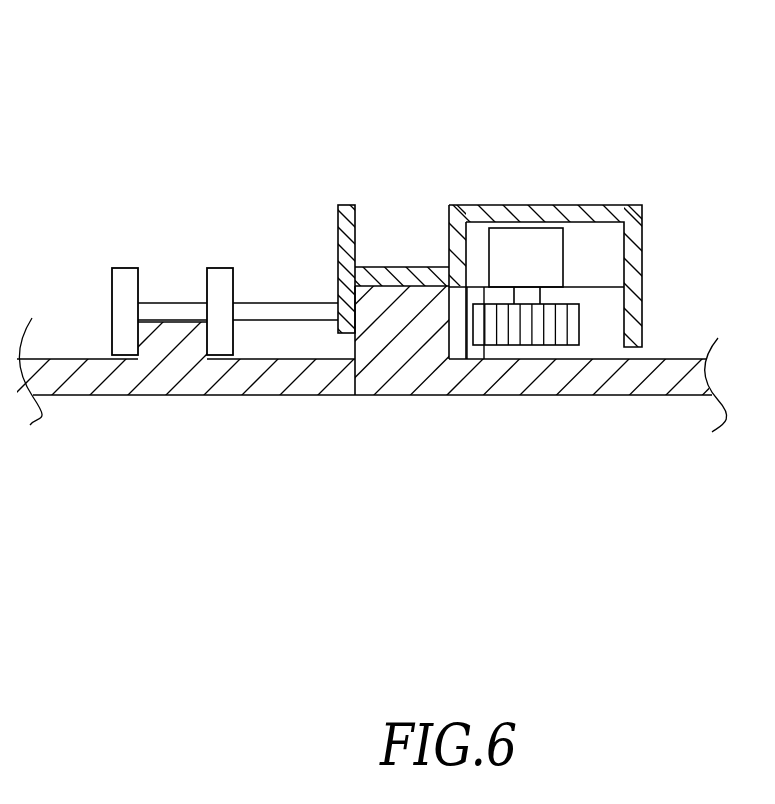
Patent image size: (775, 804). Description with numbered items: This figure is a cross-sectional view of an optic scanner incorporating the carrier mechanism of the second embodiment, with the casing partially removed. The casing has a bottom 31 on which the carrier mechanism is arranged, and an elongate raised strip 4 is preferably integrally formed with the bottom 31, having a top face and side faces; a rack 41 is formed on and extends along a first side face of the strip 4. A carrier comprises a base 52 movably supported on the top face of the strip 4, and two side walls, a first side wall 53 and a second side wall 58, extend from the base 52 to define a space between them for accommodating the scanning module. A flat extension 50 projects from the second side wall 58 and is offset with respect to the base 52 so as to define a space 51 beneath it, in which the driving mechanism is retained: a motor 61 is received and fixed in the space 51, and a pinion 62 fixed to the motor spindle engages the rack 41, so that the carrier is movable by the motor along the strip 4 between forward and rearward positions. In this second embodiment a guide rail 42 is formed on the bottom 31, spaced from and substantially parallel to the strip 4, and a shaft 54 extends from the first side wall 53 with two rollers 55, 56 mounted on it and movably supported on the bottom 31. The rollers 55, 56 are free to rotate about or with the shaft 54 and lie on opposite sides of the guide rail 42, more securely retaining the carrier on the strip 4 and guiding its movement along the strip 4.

The bottom 31 is at (628, 374).
The guide rail 42 is at (168, 347).
The elongate raised strip 4 is at (407, 325).
The roller 55 is at (128, 278).
The roller 56 is at (219, 277).
The shaft 54 is at (293, 303).
The first side wall 53 is at (338, 223).
The base 52 is at (393, 272).
The second side wall 58 is at (450, 217).
The flat extension 50 is at (507, 215).
The space 51 is at (598, 258).
The motor 61 is at (547, 260).
The rack 41 is at (460, 338).
The pinion 62 is at (514, 337).